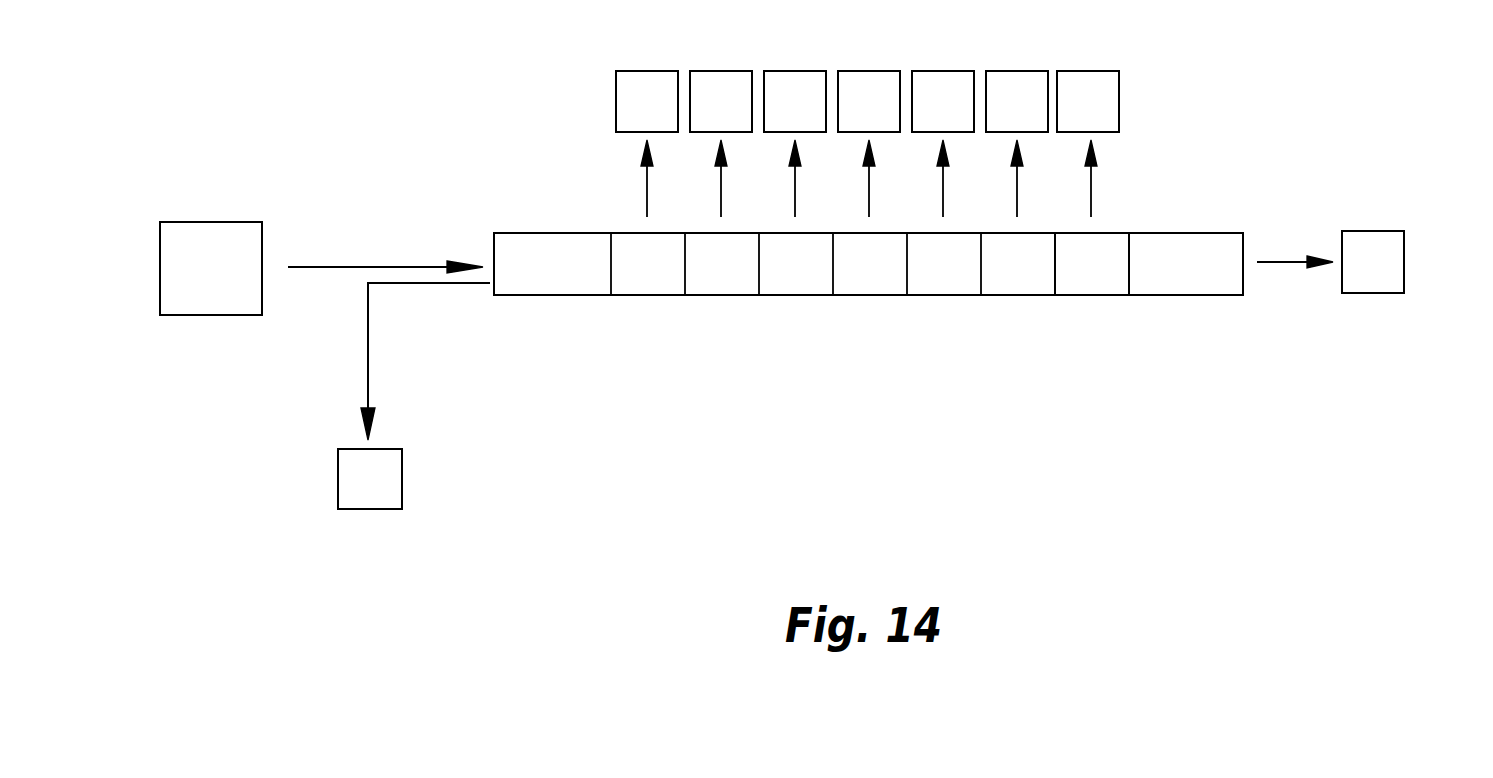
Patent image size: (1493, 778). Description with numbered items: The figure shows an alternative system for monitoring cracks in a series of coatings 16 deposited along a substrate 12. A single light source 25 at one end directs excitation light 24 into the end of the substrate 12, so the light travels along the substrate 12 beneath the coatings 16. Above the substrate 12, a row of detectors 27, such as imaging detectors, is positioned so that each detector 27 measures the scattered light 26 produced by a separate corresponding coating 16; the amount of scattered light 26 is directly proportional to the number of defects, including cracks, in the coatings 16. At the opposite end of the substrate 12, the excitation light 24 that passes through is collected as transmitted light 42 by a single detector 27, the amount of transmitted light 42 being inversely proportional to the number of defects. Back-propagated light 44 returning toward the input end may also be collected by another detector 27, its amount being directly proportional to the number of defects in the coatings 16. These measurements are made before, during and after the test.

The substrate 12 is at (582, 296).
The coatings 16 is at (1108, 276).
The excitation light 24 is at (380, 267).
The light source 25 is at (197, 222).
The scattered light 26 is at (1089, 182).
The detectors 27 is at (362, 509).
The transmitted light 42 is at (1288, 260).
The back-propagated light 44 is at (368, 318).